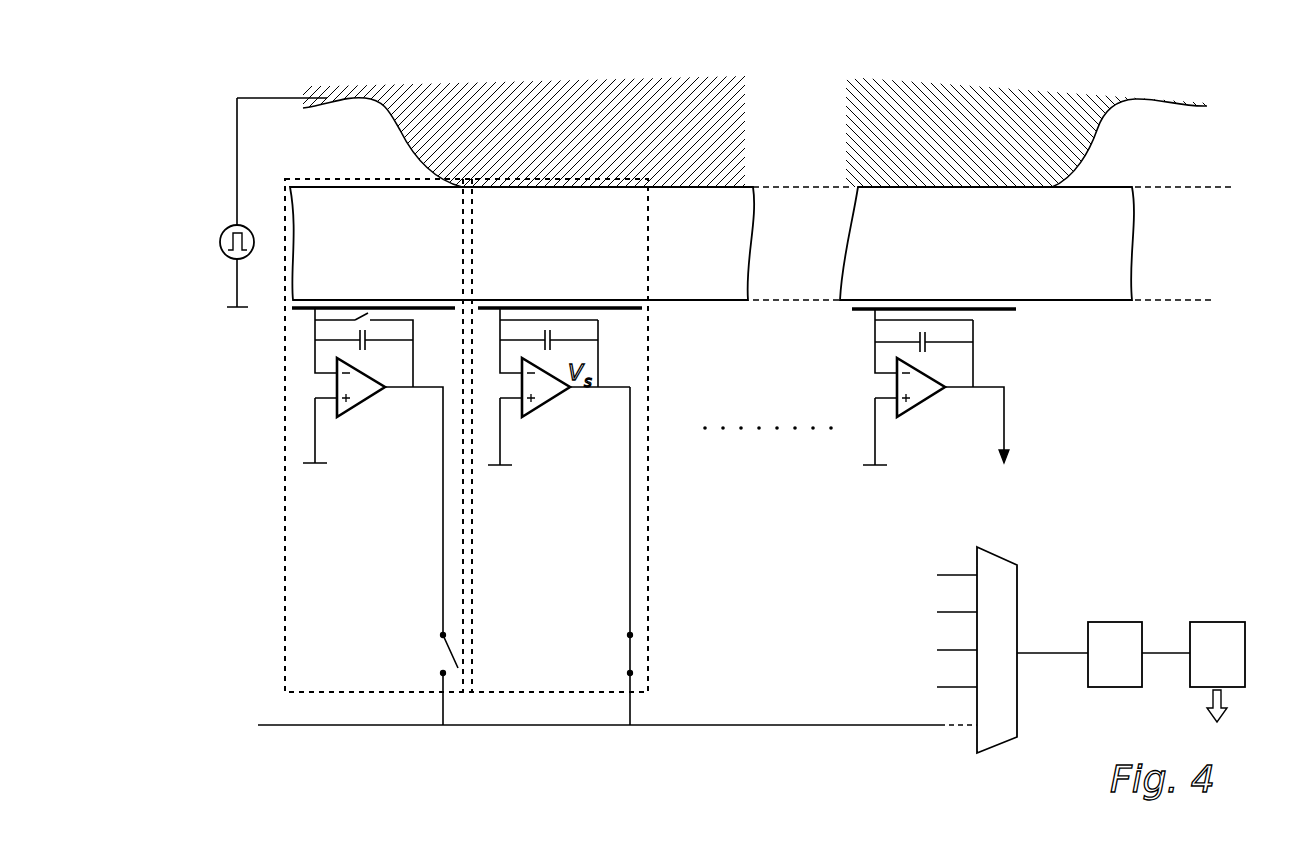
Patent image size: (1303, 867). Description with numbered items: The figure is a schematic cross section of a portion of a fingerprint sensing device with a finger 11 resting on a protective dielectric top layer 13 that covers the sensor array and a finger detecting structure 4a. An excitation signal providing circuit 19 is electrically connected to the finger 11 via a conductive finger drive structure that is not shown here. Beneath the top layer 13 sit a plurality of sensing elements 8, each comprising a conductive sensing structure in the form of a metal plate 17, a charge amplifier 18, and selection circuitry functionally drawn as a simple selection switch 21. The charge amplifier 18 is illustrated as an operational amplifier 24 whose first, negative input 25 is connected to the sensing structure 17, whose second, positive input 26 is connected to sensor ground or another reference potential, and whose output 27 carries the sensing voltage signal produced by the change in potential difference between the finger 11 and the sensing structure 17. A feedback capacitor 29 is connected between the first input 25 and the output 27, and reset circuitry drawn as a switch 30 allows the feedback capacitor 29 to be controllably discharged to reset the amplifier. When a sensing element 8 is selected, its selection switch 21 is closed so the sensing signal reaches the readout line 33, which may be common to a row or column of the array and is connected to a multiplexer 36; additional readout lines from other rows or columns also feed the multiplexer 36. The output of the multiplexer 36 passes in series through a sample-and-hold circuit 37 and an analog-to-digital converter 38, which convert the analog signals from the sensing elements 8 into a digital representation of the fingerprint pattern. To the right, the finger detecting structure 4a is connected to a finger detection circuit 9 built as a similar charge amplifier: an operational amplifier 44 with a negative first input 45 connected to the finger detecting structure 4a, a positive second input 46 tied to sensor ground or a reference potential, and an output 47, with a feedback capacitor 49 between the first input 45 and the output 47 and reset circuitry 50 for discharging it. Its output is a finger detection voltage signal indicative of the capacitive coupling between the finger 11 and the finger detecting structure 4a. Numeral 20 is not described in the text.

The finger detecting structure 4a is at (990, 308).
The sensing element 8 is at (500, 703).
The finger detection circuit 9 is at (944, 358).
The finger 11 is at (623, 129).
The protective dielectric top layer 13 is at (578, 239).
The sensing structure 17 is at (620, 308).
The charge amplifier 18 is at (541, 426).
The excitation signal providing circuit 19 is at (222, 250).
The output node 20 is at (603, 410).
The selection switch 21 is at (616, 646).
The operational amplifier 24 is at (546, 372).
The first input 25 is at (520, 378).
The second input 26 is at (508, 403).
The output 27 is at (571, 389).
The feedback capacitor 29 is at (565, 318).
The reset circuitry 30 is at (548, 318).
The readout line 33 is at (527, 727).
The multiplexer 36 is at (1000, 553).
The sample-and-hold circuit 37 is at (1112, 622).
The analog-to-digital converter 38 is at (1218, 622).
The operational amplifier 44 is at (925, 373).
The first input 45 is at (893, 373).
The second input 46 is at (893, 400).
The output 47 is at (977, 425).
The feedback capacitor 49 is at (938, 324).
The reset circuitry 50 is at (928, 317).